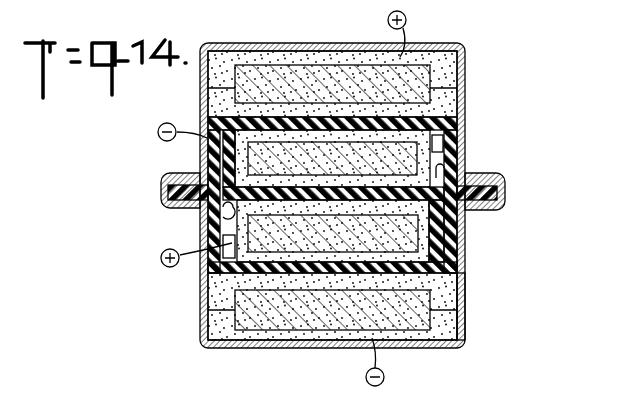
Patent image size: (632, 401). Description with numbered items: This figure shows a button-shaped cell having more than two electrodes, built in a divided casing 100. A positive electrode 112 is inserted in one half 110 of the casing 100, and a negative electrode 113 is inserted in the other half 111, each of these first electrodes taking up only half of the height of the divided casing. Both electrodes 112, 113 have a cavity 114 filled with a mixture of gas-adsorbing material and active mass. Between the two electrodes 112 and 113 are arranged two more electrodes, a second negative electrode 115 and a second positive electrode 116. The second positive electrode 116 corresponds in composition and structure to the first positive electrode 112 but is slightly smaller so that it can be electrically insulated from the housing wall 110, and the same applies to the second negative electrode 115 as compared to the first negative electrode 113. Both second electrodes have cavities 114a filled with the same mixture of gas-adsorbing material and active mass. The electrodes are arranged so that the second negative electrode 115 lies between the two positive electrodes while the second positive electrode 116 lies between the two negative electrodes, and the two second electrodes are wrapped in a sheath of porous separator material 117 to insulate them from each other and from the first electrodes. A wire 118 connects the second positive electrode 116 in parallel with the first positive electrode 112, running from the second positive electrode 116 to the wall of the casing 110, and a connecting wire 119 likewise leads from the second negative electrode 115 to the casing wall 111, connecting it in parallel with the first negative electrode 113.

The casing 100 is at (479, 61).
The casing half 110 is at (466, 88).
The casing half 111 is at (463, 296).
The positive electrode 112 is at (440, 62).
The negative electrode 113 is at (447, 328).
The cavity 114 is at (310, 78).
The cavity 114a is at (352, 165).
The second negative electrode 115 is at (452, 136).
The second positive electrode 116 is at (434, 250).
The porous separator material 117 is at (435, 143).
The wire 118 is at (226, 214).
The connecting wire 119 is at (436, 173).